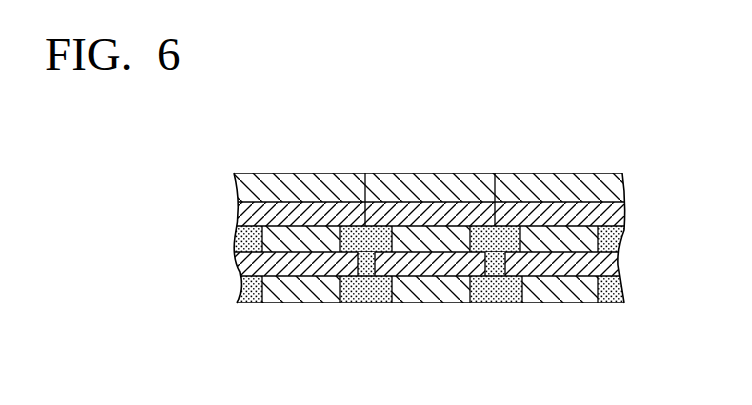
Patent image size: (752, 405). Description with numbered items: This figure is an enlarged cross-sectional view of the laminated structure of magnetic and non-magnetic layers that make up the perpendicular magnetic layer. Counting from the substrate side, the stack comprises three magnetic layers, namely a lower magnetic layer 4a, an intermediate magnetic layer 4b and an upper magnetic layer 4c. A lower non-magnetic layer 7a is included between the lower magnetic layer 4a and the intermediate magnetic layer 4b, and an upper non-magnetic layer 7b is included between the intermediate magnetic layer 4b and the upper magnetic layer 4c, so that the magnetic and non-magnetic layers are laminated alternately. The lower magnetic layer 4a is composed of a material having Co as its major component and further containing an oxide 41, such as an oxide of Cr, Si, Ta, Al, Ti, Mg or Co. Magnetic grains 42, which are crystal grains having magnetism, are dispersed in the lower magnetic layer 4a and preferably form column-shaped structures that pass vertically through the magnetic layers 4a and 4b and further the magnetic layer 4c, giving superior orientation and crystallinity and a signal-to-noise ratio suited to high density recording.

The lower magnetic layer 4a is at (460, 321).
The intermediate magnetic layer 4b is at (606, 233).
The upper magnetic layer 4c is at (604, 181).
The lower non-magnetic layer 7a is at (610, 263).
The upper non-magnetic layer 7b is at (603, 210).
The oxide 41 is at (498, 290).
The magnetic grains 42 is at (433, 290).